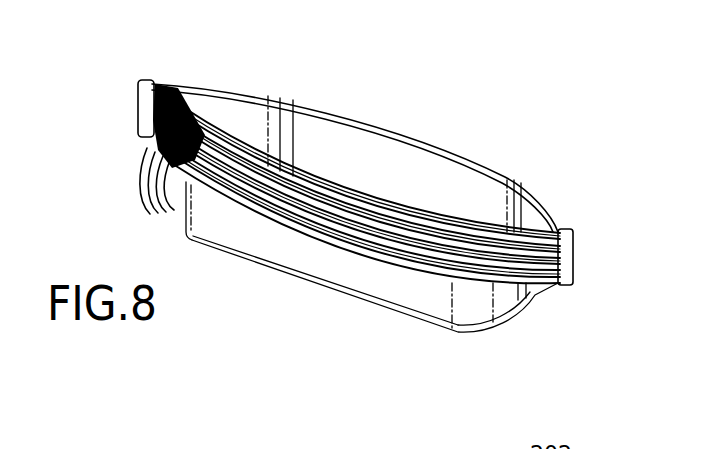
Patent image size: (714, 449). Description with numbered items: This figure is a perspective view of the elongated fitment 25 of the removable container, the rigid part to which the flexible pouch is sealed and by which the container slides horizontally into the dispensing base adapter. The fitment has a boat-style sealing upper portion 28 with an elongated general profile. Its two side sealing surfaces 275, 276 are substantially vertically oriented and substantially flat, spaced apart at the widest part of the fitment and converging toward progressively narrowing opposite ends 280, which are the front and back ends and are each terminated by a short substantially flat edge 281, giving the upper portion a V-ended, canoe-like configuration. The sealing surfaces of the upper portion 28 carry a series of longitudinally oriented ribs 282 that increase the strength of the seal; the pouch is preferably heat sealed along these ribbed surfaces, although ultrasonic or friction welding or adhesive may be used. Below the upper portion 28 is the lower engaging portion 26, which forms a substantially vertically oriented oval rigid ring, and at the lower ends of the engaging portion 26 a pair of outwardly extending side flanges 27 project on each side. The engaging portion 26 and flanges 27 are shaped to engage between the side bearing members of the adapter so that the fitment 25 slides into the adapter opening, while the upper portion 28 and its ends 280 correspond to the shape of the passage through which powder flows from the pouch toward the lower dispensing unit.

The elongated fitment 25 is at (452, 127).
The progressively narrowing opposite ends 280 is at (267, 65).
The side sealing surface 275 is at (396, 181).
The side sealing surface 276 is at (342, 277).
The outwardly extending side flange 27 is at (392, 317).
The lower engaging portion 26 is at (507, 299).
The sealing upper portion 28 is at (587, 238).
The short substantially flat edge 281 is at (573, 233).
The longitudinally oriented ribs 282 is at (143, 184).